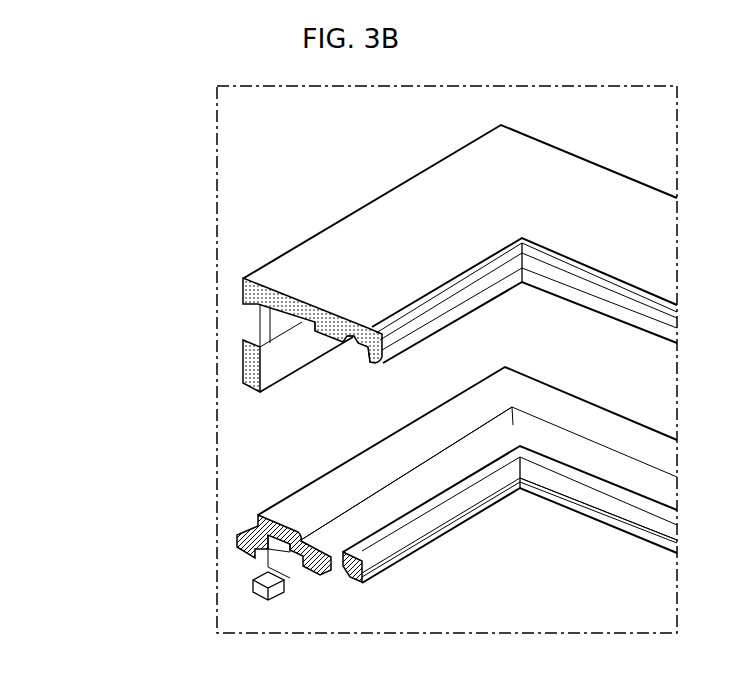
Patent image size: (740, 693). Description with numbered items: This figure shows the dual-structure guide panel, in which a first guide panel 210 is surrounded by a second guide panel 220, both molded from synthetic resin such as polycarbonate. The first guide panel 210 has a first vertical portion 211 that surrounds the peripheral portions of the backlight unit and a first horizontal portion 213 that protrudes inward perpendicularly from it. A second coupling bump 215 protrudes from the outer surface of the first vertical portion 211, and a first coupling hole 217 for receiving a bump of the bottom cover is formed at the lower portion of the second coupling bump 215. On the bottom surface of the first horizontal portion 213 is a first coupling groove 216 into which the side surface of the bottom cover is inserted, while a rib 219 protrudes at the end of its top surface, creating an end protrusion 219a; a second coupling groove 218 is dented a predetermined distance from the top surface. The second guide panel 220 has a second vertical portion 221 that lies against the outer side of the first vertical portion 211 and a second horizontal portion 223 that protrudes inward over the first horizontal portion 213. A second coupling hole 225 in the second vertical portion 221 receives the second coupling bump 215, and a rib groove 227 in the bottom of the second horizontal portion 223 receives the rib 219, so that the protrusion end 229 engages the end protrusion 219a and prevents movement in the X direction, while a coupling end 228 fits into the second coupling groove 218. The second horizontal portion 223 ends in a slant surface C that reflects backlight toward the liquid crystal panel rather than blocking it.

The first guide panel 210 is at (368, 521).
The first vertical portion 211 is at (257, 522).
The first horizontal portion 213 is at (305, 505).
The second coupling bump 215 is at (254, 528).
The first coupling groove 216 is at (281, 556).
The first coupling hole 217 is at (252, 576).
The second coupling groove 218 is at (455, 462).
The rib 219 is at (392, 581).
The end protrusion 219a is at (425, 542).
The second guide panel 220 is at (93, 224).
The second vertical portion 221 is at (243, 350).
The second horizontal portion 223 is at (318, 265).
The second coupling hole 225 is at (246, 323).
The rib groove 227 is at (354, 358).
The coupling end 228 is at (325, 343).
The protrusion end 229 is at (379, 364).
The slant surface C is at (458, 323).